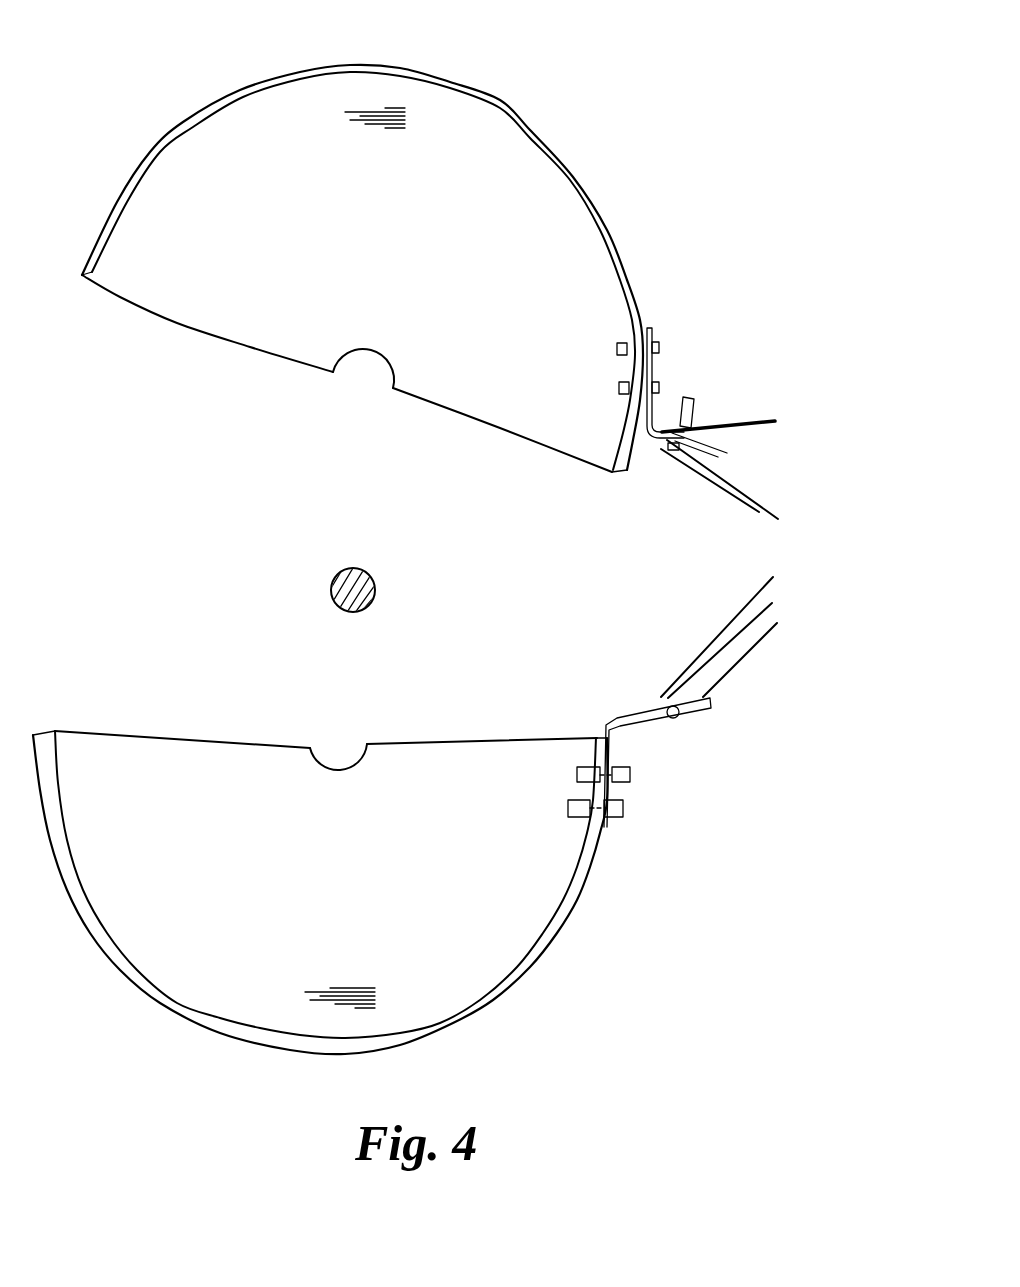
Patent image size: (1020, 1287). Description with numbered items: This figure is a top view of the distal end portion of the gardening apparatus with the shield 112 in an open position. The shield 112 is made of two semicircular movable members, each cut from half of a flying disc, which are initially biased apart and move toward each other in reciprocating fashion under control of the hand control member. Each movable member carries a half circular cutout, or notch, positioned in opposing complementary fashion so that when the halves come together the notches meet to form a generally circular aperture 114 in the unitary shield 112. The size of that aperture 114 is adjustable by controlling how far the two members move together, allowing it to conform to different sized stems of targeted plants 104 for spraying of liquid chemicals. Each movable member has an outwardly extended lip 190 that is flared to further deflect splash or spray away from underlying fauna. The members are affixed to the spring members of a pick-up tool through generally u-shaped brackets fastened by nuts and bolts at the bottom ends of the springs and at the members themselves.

The targeted plant 104 is at (372, 603).
The shield 112 is at (160, 685).
The aperture 114 is at (345, 720).
The outwardly extended lip 190 is at (243, 90).